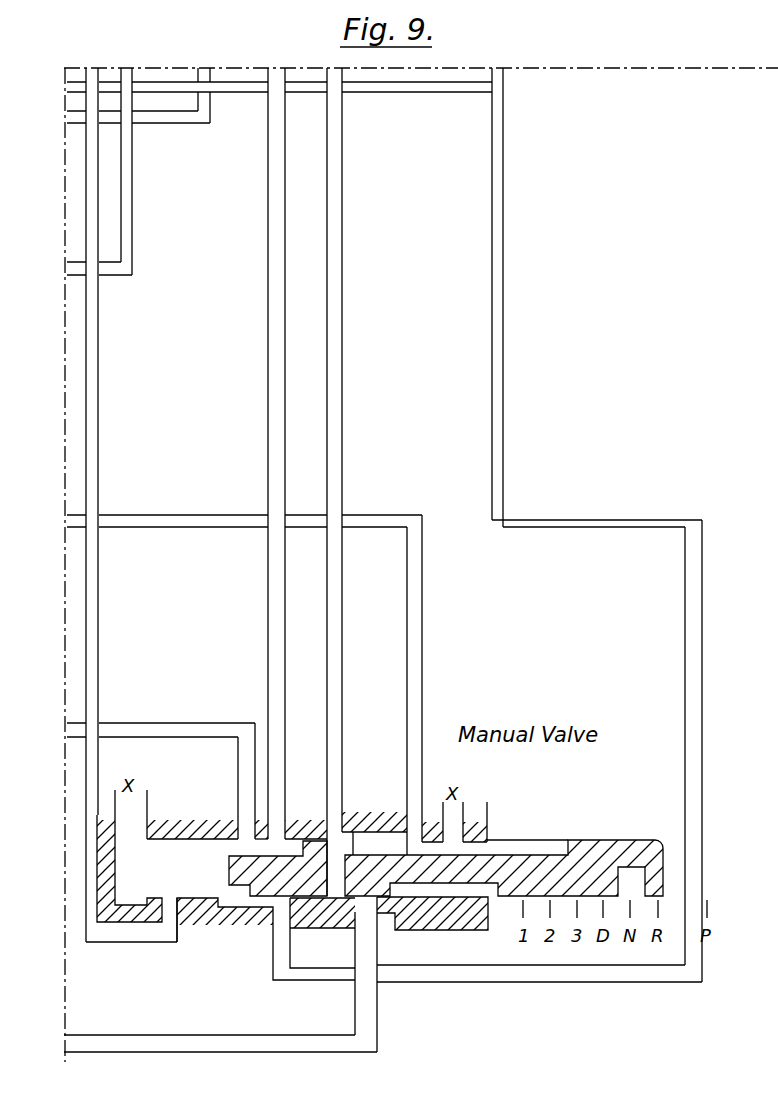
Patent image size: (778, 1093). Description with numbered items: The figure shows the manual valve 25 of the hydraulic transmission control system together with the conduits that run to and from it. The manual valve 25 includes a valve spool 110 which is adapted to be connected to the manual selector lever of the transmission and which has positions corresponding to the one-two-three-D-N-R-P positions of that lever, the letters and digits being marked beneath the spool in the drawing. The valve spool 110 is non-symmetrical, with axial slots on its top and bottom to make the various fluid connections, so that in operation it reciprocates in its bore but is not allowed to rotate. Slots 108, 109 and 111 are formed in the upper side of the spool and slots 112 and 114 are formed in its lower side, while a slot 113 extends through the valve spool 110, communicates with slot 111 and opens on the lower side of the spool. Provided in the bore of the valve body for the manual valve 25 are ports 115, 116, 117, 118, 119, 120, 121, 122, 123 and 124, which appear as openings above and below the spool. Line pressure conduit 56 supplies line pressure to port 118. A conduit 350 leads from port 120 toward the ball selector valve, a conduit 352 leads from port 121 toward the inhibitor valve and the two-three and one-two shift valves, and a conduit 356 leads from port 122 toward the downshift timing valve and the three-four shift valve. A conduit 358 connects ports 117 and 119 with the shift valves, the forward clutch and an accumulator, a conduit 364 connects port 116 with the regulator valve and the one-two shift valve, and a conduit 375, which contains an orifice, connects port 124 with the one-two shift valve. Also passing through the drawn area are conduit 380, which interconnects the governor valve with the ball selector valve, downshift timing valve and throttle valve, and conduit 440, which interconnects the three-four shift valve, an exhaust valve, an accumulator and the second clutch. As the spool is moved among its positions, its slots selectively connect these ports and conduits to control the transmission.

The manual valve 25 is at (419, 827).
The line pressure conduit 56 is at (162, 1042).
The slot 108 is at (237, 846).
The slot 109 is at (490, 844).
The valve spool 110 is at (593, 838).
The slot 111 is at (384, 830).
The slot 112 is at (267, 908).
The slot 113 is at (335, 912).
The slot 114 is at (480, 910).
The port 115 is at (463, 830).
The port 116 is at (416, 834).
The port 117 is at (455, 912).
The port 118 is at (366, 912).
The port 119 is at (222, 893).
The port 120 is at (338, 838).
The port 121 is at (247, 840).
The port 122 is at (280, 838).
The port 123 is at (132, 836).
The port 124 is at (170, 907).
The conduit 350 is at (337, 206).
The conduit 352 is at (182, 723).
The conduit 356 is at (271, 201).
The conduit 358 is at (503, 116).
The conduit 364 is at (190, 515).
The conduit 375 is at (98, 157).
The conduit 380 is at (200, 116).
The conduit 440 is at (132, 224).